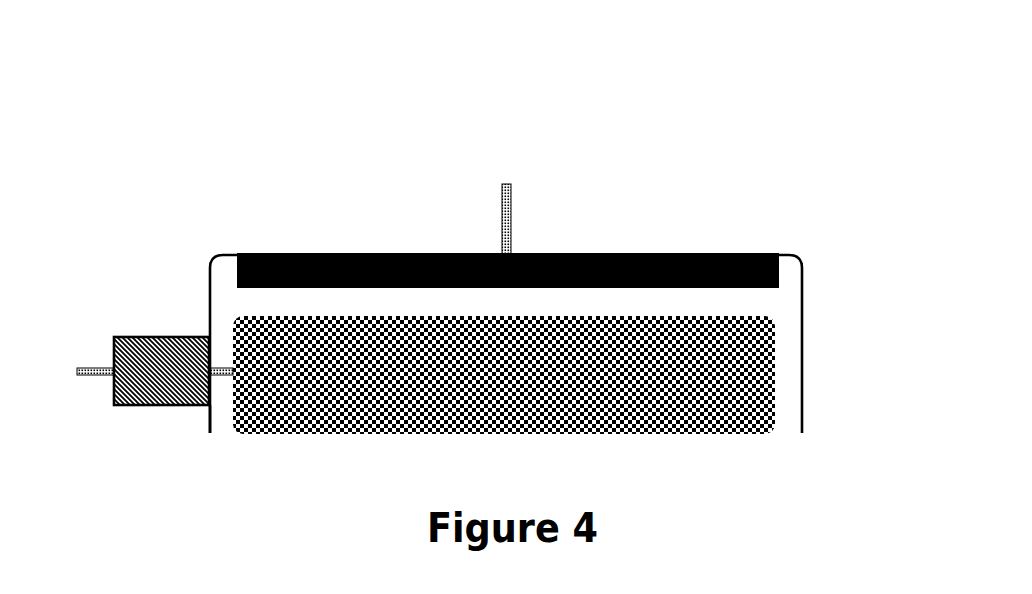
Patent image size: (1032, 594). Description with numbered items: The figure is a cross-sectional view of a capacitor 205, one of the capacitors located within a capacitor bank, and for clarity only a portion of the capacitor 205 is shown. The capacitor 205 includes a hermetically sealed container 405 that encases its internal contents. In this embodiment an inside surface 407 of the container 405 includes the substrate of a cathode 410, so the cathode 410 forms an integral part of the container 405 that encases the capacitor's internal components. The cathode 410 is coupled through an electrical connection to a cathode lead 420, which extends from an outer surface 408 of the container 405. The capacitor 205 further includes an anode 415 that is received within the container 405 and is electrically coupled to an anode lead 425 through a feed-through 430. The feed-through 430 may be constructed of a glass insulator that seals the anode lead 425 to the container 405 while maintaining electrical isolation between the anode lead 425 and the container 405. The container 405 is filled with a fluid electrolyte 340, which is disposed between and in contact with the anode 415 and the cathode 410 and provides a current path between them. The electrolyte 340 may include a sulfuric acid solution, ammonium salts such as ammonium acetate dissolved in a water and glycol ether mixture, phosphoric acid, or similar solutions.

The capacitor 205 is at (372, 134).
The fluid electrolyte 340 is at (747, 307).
The hermetically sealed container 405 is at (802, 311).
The inside surface 407 is at (228, 417).
The outer surface 408 is at (248, 237).
The cathode 410 is at (678, 254).
The anode 415 is at (775, 400).
The cathode lead 420 is at (511, 208).
The anode lead 425 is at (102, 368).
The feed-through 430 is at (178, 337).